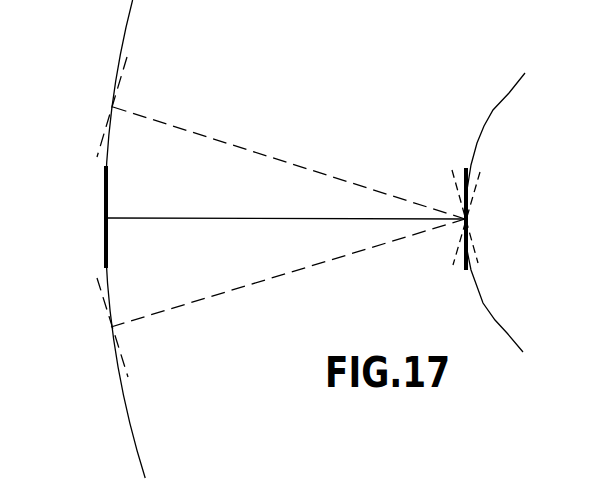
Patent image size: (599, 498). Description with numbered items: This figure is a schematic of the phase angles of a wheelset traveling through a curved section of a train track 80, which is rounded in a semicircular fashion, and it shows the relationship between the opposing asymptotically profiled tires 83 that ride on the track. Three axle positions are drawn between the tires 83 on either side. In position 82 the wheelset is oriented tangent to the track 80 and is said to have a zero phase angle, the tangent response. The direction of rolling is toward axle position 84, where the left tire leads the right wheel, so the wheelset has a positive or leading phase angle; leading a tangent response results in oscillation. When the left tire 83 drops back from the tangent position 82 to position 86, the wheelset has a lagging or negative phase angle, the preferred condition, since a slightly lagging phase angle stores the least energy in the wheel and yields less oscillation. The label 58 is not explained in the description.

The train track 80 is at (135, 2).
The optical element 58 is at (394, 13).
The asymptotically profiled tire 83 is at (104, 190).
The tangent response axle position 82 is at (162, 216).
The leading axle position 84 is at (327, 173).
The lagging axle position 86 is at (290, 272).